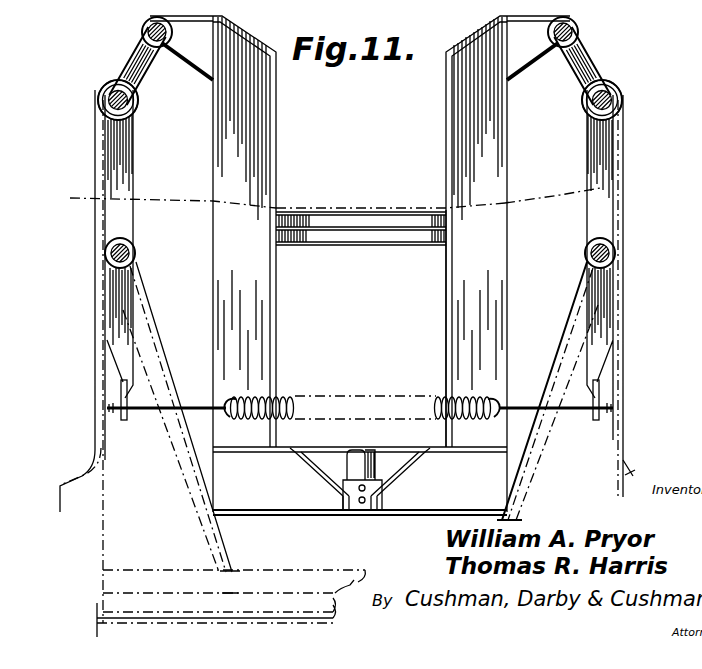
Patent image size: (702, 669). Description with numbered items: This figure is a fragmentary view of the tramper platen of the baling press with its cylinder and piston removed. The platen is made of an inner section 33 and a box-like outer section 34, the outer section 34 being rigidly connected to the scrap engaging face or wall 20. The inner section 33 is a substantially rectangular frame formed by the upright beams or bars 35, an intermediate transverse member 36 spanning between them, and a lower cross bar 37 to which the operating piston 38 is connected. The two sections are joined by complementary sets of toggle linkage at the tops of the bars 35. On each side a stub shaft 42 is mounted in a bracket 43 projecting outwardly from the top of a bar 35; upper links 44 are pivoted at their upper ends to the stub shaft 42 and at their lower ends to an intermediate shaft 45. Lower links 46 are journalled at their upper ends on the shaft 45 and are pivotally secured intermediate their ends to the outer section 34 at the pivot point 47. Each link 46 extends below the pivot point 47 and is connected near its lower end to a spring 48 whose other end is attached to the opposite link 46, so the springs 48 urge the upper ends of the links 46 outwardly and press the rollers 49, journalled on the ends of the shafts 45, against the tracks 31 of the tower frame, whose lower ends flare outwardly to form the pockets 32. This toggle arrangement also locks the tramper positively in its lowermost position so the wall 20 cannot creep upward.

The scrap engaging face 20 is at (171, 624).
The tracks 31 is at (657, 172).
The pockets 32 is at (83, 480).
The inner section 33 is at (446, 322).
The outer section 34 is at (105, 469).
The beams or bars 35 is at (255, 143).
The intermediate transverse member 36 is at (367, 237).
The lower cross bar 37 is at (293, 497).
The operating piston 38 is at (352, 462).
The stub shaft 42 is at (148, 27).
The bracket 43 is at (193, 50).
The upper links 44 is at (137, 58).
The intermediate shaft 45 is at (107, 94).
The lower links 46 is at (117, 150).
The pivot point 47 is at (107, 253).
The spring 48 is at (290, 396).
The rollers 49 is at (138, 107).